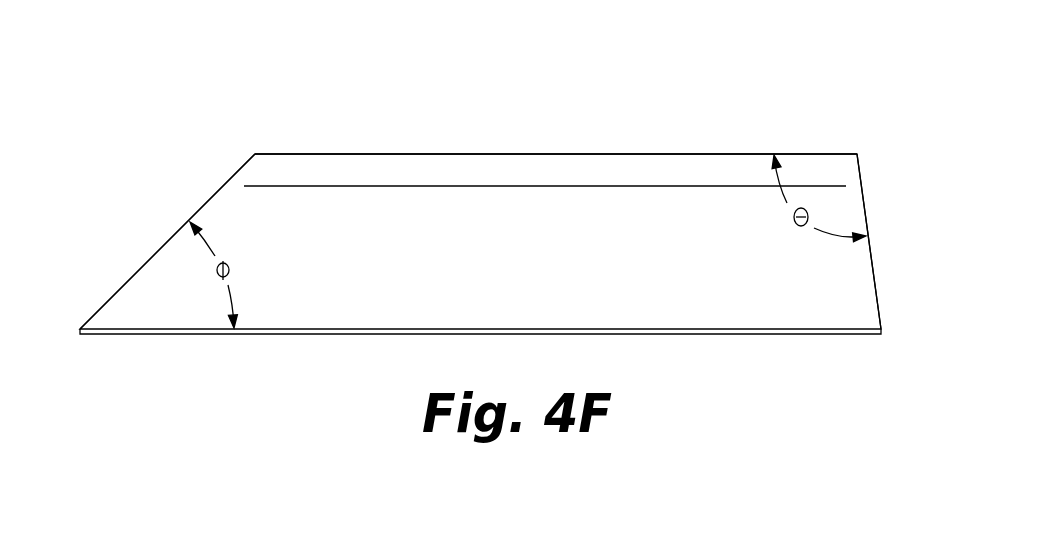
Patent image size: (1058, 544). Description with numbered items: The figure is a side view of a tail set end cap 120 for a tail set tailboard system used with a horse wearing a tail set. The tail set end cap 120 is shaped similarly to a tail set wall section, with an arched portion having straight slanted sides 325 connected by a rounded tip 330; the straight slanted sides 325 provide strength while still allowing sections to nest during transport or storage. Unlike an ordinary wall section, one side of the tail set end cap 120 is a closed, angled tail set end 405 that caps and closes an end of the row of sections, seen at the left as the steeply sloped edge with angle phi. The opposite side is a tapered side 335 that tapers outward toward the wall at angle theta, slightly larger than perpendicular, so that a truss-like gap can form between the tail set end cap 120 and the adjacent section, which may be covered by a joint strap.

The tail set end cap 120 is at (383, 99).
The straight slanted sides 325 is at (537, 268).
The rounded tip 330 is at (610, 170).
The terminal sides 335 is at (873, 272).
The closed, angled tail set end 405 is at (157, 252).